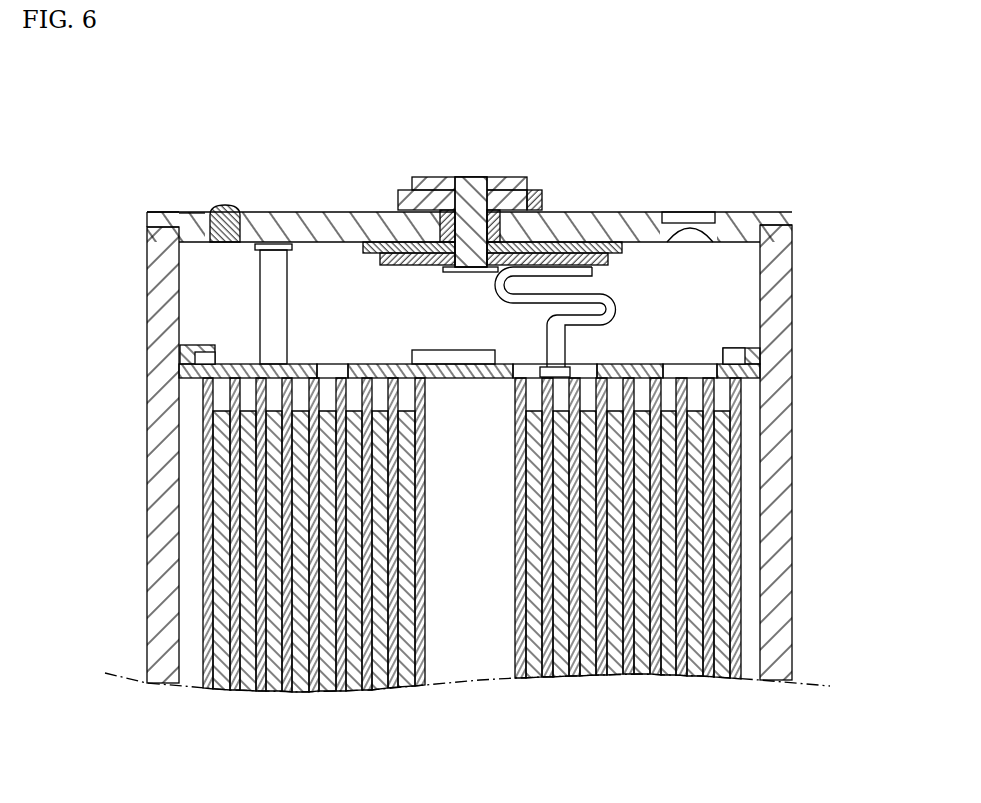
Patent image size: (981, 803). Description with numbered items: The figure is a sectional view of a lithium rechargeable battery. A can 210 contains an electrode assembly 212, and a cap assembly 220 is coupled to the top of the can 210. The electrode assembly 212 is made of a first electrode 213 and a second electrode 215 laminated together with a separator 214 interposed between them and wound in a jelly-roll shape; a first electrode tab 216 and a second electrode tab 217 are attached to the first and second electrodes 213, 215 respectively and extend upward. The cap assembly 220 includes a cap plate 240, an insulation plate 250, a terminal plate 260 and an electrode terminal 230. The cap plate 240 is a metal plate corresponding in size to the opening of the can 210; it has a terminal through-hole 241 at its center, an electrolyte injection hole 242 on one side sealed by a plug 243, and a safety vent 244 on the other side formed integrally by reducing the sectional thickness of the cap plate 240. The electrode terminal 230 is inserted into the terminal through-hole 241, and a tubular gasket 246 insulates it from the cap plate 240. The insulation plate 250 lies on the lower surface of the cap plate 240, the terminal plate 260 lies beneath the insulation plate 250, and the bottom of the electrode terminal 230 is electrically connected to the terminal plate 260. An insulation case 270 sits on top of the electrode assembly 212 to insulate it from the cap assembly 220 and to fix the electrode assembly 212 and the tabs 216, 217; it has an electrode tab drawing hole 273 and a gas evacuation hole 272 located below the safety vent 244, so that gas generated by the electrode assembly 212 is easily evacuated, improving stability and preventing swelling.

The can 210 is at (793, 547).
The electrode assembly 212 is at (553, 577).
The first electrode 213 is at (718, 668).
The separator 214 is at (734, 674).
The second electrode 215 is at (693, 673).
The first electrode tab 216 is at (265, 297).
The second electrode tab 217 is at (613, 303).
The cap assembly 220 is at (612, 168).
The electrode terminal 230 is at (468, 190).
The cap plate 240 is at (150, 212).
The terminal through-hole 241 is at (438, 212).
The electrolyte injection hole 242 is at (195, 212).
The plug 243 is at (224, 206).
The safety vent 244 is at (676, 220).
The tubular gasket 246 is at (540, 193).
The insulation plate 250 is at (353, 242).
The terminal plate 260 is at (380, 258).
The insulation case 270 is at (242, 363).
The gas evacuation hole 272 is at (697, 363).
The electrode tab drawing hole 273 is at (585, 367).